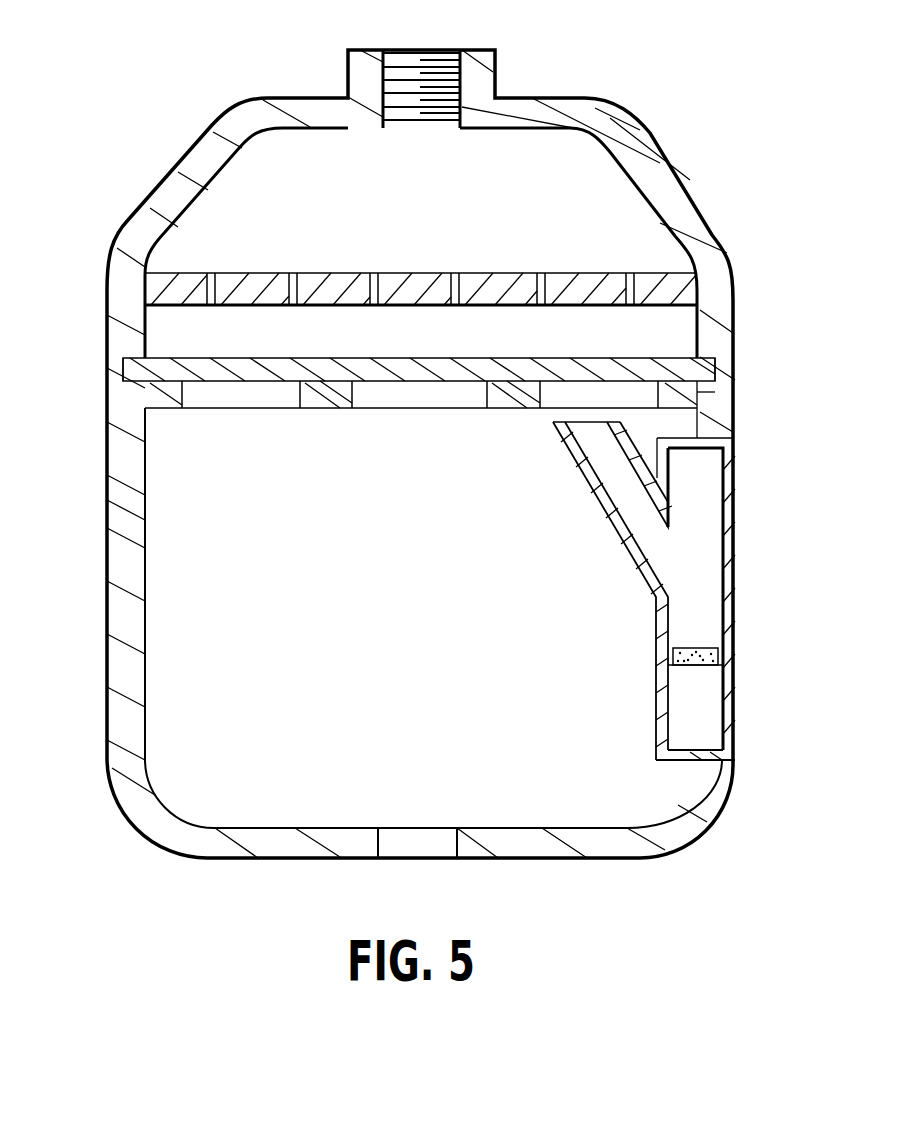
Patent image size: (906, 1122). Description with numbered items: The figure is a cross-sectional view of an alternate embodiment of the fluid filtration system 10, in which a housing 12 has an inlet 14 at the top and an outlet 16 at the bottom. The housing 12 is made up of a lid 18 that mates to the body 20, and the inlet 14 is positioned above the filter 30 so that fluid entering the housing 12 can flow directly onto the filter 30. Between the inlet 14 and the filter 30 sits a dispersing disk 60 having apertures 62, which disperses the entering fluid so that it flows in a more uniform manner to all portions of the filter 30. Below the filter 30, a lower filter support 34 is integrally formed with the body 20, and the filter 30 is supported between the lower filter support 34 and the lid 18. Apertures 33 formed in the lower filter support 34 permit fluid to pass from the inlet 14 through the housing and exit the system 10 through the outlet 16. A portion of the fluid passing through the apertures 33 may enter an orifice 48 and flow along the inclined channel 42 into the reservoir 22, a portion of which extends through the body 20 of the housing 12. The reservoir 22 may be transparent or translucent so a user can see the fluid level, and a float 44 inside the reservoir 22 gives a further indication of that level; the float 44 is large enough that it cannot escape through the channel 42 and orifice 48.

The fluid filtration system 10 is at (800, 455).
The housing 12 is at (720, 328).
The inlet 14 is at (427, 70).
The outlet 16 is at (430, 843).
The lid 18 is at (652, 182).
The body 20 is at (118, 552).
The reservoir 22 is at (708, 576).
The filter 30 is at (147, 370).
The apertures 33 is at (395, 400).
The lower filter support 34 is at (688, 393).
The channel 42 is at (622, 475).
The float 44 is at (700, 647).
The orifice 48 is at (583, 423).
The dispersing disk 60 is at (180, 287).
The apertures 62 is at (373, 273).